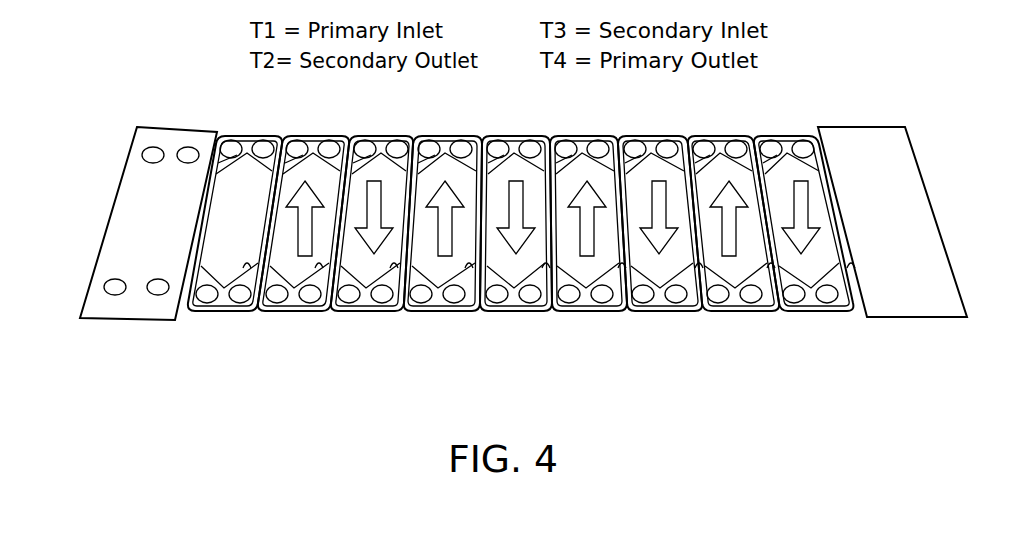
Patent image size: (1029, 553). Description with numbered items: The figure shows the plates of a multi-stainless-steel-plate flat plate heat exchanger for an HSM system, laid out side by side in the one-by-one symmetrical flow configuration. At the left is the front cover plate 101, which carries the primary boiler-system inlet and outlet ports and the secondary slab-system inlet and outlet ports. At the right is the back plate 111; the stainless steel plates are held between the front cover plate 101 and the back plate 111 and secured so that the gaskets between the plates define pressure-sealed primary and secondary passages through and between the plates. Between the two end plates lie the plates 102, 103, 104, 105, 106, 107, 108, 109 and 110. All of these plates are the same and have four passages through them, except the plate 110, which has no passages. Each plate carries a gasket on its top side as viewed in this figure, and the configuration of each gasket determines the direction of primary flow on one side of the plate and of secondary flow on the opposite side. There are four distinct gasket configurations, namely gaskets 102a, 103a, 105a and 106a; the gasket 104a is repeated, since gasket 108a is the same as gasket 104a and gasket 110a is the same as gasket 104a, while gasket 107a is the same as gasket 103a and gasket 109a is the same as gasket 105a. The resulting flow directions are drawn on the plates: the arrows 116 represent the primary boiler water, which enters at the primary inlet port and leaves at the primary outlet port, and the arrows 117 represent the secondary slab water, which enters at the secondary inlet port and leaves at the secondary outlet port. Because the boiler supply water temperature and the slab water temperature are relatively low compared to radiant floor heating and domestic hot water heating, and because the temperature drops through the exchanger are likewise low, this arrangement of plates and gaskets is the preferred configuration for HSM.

The front cover plate 101 is at (133, 320).
The plate 102 is at (213, 317).
The plate 103 is at (265, 317).
The plate 104 is at (340, 317).
The plate 105 is at (425, 313).
The plate 106 is at (488, 313).
The plate 107 is at (565, 313).
The plate 108 is at (643, 313).
The plate 109 is at (723, 313).
The plate 110 is at (797, 313).
The back plate 111 is at (937, 320).
The gasket configuration 102a is at (246, 264).
The gasket configuration 103a is at (318, 264).
The gasket configuration 104a is at (393, 264).
The gasket configuration 105a is at (468, 264).
The gasket configuration 106a is at (545, 264).
The gasket 107a is at (621, 264).
The gasket 108a is at (698, 264).
The gasket 109a is at (770, 264).
The gasket 110a is at (850, 264).
The arrows 116 is at (396, 170).
The arrows 117 is at (303, 181).